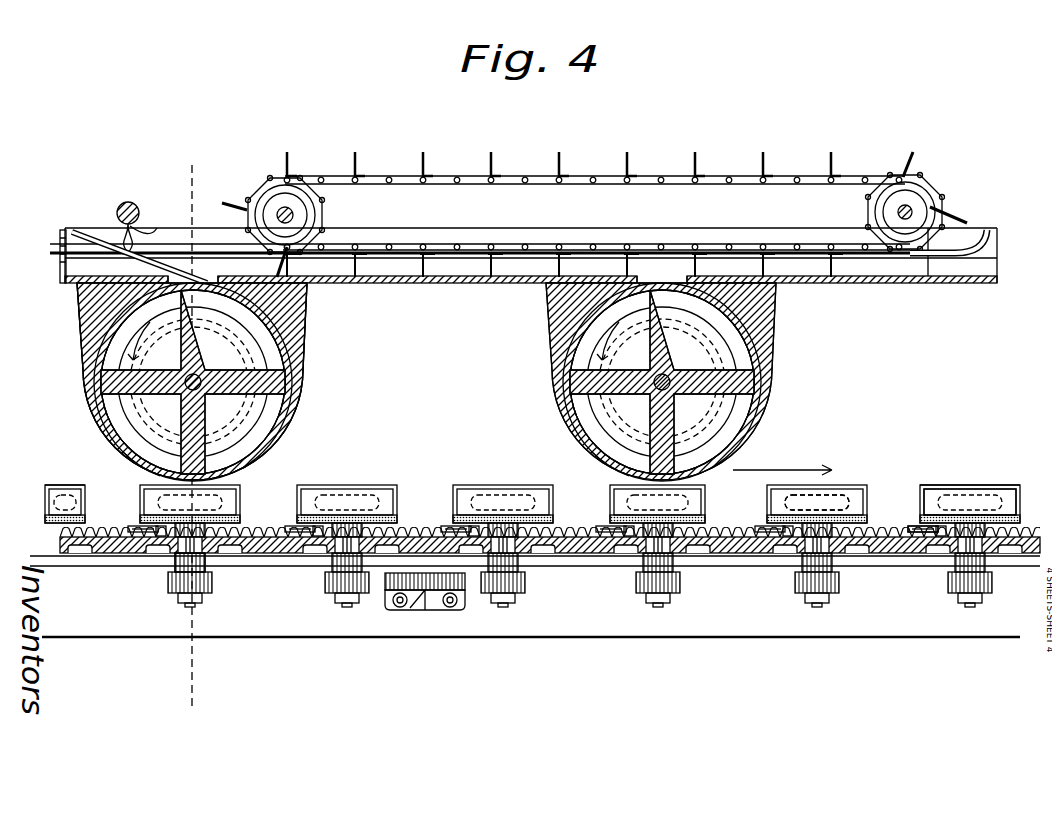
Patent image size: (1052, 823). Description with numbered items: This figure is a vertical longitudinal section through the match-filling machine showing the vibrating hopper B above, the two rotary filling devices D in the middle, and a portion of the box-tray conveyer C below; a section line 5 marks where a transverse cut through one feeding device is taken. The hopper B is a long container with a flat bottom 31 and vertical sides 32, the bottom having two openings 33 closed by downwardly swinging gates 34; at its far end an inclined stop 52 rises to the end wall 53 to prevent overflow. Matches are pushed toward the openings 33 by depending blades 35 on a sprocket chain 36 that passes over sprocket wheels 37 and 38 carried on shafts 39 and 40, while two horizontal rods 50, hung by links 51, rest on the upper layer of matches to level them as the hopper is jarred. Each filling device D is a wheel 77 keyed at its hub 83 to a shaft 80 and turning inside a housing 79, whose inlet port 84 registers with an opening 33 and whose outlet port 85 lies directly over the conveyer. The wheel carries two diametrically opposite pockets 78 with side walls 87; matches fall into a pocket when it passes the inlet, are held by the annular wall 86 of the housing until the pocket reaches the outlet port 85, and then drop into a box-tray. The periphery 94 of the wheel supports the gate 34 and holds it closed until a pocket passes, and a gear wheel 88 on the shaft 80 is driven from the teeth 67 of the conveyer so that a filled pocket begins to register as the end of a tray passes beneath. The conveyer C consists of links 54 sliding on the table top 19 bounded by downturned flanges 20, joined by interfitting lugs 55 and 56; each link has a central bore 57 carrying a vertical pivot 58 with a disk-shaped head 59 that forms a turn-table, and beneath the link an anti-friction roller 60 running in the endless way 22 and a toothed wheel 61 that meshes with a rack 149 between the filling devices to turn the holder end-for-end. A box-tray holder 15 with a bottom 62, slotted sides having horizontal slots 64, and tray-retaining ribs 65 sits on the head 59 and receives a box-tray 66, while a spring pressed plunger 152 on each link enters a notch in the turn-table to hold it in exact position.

The section line 5— 5 is at (190, 440).
The box-tray holder 15 is at (1018, 478).
The table top 19 is at (893, 565).
The downturned flanges 20 is at (758, 628).
The endless slot or way 22 is at (758, 557).
The flat bottom 31 is at (470, 283).
The vertical sides 32 is at (437, 233).
The openings 33 is at (643, 280).
The gates or traps 34 is at (665, 277).
The depending blades 35 is at (627, 153).
The sprocket chain 36 is at (460, 180).
The sprocket wheel 37 is at (309, 215).
The sprocket wheel 38 is at (873, 202).
The shaft 39 is at (292, 213).
The shaft 40 is at (900, 214).
The horizontal rods 50 is at (402, 260).
The links 51 is at (155, 228).
The stop 52 is at (95, 232).
The end wall 53 is at (60, 270).
The links 54 is at (1007, 537).
The perforated horizontal lug 55 is at (912, 550).
The perforated horizontal lug 56 is at (870, 532).
The central bore 57 is at (182, 555).
The vertical pivot 58 is at (207, 560).
The disk-shaped head 59 is at (367, 485).
The anti-friction roller 60 is at (815, 558).
The toothed wheel 61 is at (985, 588).
The bottom 62 is at (930, 512).
The horizontal slots 64 is at (823, 490).
The tray-retaining ribs 65 is at (983, 482).
The box-tray 66 is at (823, 484).
The transverse teeth 67 is at (1030, 528).
The rotatable wheels 77 is at (775, 403).
The pockets 78 is at (617, 470).
The housings 79 is at (427, 385).
The shaft 80 is at (697, 403).
The hub 83 is at (173, 363).
The inlet port 84 is at (547, 310).
The outlet port 85 is at (617, 492).
The annular wall 86 is at (550, 363).
The side walls 87 is at (213, 300).
The gear wheel 88 is at (305, 320).
The periphery 94 is at (567, 435).
The rack 149 is at (423, 583).
The spring pressed plunger 152 is at (472, 537).
The hopper B is at (530, 215).
The conveyer C is at (527, 549).
The filling devices D is at (422, 371).